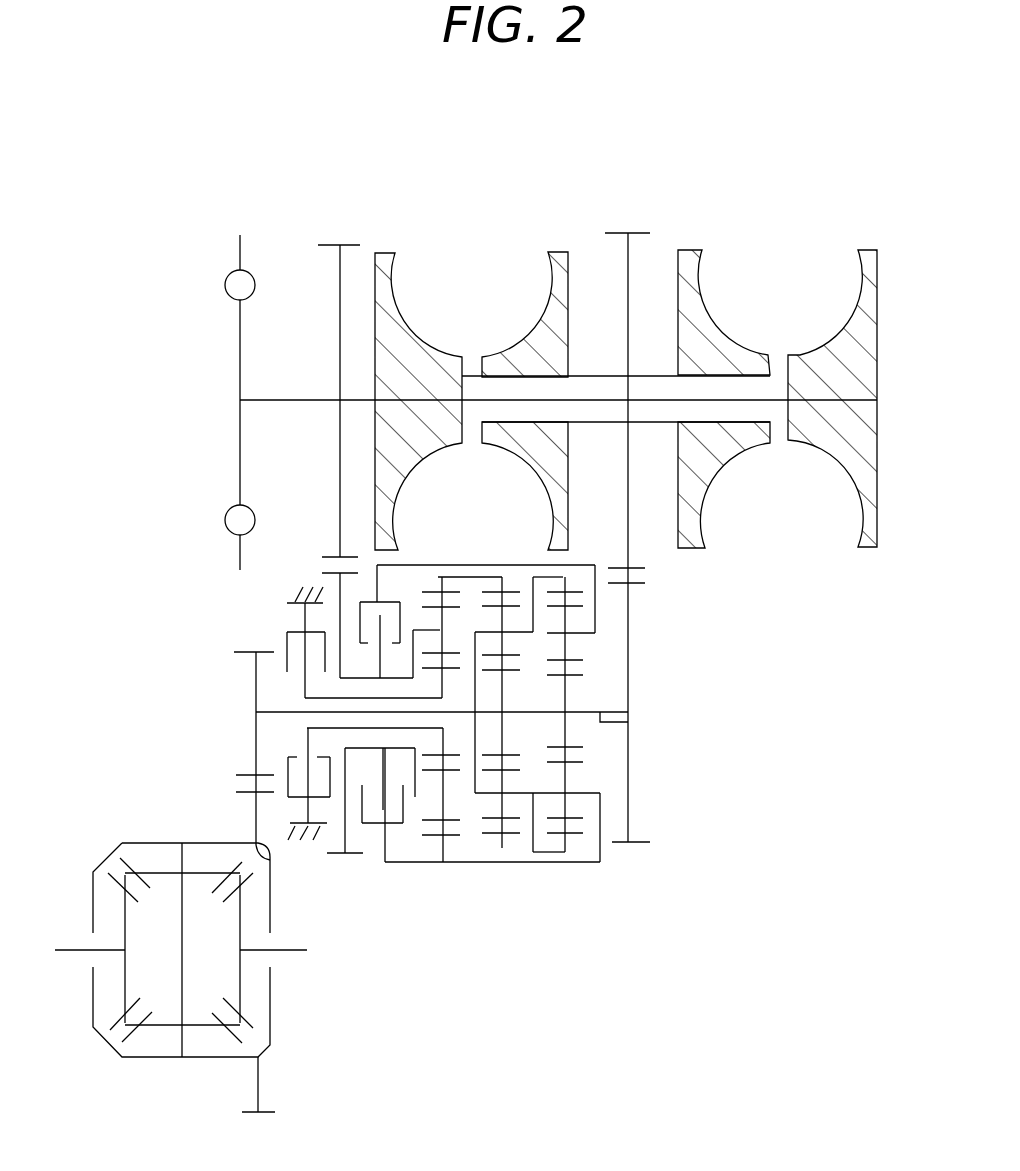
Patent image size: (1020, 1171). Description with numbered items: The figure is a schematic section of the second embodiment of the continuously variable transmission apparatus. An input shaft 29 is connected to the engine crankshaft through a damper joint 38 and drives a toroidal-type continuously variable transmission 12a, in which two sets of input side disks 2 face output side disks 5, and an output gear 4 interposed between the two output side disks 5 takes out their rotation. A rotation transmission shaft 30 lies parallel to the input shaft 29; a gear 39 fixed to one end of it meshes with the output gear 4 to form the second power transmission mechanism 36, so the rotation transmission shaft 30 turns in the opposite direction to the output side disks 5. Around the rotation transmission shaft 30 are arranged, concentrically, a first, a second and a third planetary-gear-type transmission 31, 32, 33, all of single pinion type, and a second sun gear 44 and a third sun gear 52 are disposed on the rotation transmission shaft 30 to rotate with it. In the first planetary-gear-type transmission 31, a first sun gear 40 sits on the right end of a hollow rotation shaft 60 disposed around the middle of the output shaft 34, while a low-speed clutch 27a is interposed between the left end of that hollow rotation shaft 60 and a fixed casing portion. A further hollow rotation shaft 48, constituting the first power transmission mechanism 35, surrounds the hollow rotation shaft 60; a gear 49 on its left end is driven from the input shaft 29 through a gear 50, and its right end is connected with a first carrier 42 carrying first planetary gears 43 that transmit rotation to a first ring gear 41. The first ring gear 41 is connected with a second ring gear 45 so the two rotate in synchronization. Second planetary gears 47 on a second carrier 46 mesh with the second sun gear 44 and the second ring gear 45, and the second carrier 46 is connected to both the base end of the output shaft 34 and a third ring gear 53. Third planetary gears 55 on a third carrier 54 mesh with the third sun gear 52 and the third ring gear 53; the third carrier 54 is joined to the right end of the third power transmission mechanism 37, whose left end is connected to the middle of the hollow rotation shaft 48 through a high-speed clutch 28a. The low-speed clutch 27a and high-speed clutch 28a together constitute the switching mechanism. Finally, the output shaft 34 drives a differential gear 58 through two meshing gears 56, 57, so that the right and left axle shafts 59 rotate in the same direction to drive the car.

The input side disk 2 is at (393, 293).
The output gear 4 is at (628, 230).
The output side disk 5 is at (556, 285).
The toroidal-type continuously variable transmission 12a is at (498, 245).
The low-speed clutch 27a is at (288, 787).
The high-speed clutch 28a is at (358, 748).
The input shaft 29 is at (293, 395).
The rotation transmission shaft 30 is at (600, 722).
The first planetary-gear-type transmission 31 is at (482, 975).
The second planetary-gear-type transmission 32 is at (543, 975).
The third planetary-gear-type transmission 33 is at (615, 972).
The output shaft 34 is at (282, 712).
The first power transmission mechanism 35 is at (321, 616).
The second power transmission mechanism 36 is at (650, 603).
The third power transmission mechanism 37 is at (592, 875).
The damper joint 38 is at (224, 287).
The gear 39 is at (628, 653).
The first sun gear 40 is at (430, 835).
The first ring gear 41 is at (447, 800).
The first carrier 42 is at (418, 797).
The first planetary gears 43 is at (442, 626).
The second sun gear 44 is at (507, 693).
The second ring gear 45 is at (517, 845).
The second carrier 46 is at (502, 626).
The second planetary gears 47 is at (502, 626).
The hollow rotation shaft 48 is at (378, 823).
The gear 49 is at (347, 830).
The gear 50 is at (240, 440).
The third sun gear 52 is at (570, 695).
The third ring gear 53 is at (565, 577).
The third carrier 54 is at (593, 782).
The third planetary gears 55 is at (568, 648).
The gear 56 is at (248, 725).
The gear 57 is at (253, 833).
The differential gear 58 is at (153, 1027).
The axle shafts 59 is at (72, 952).
The hollow rotation shaft 60 is at (327, 730).